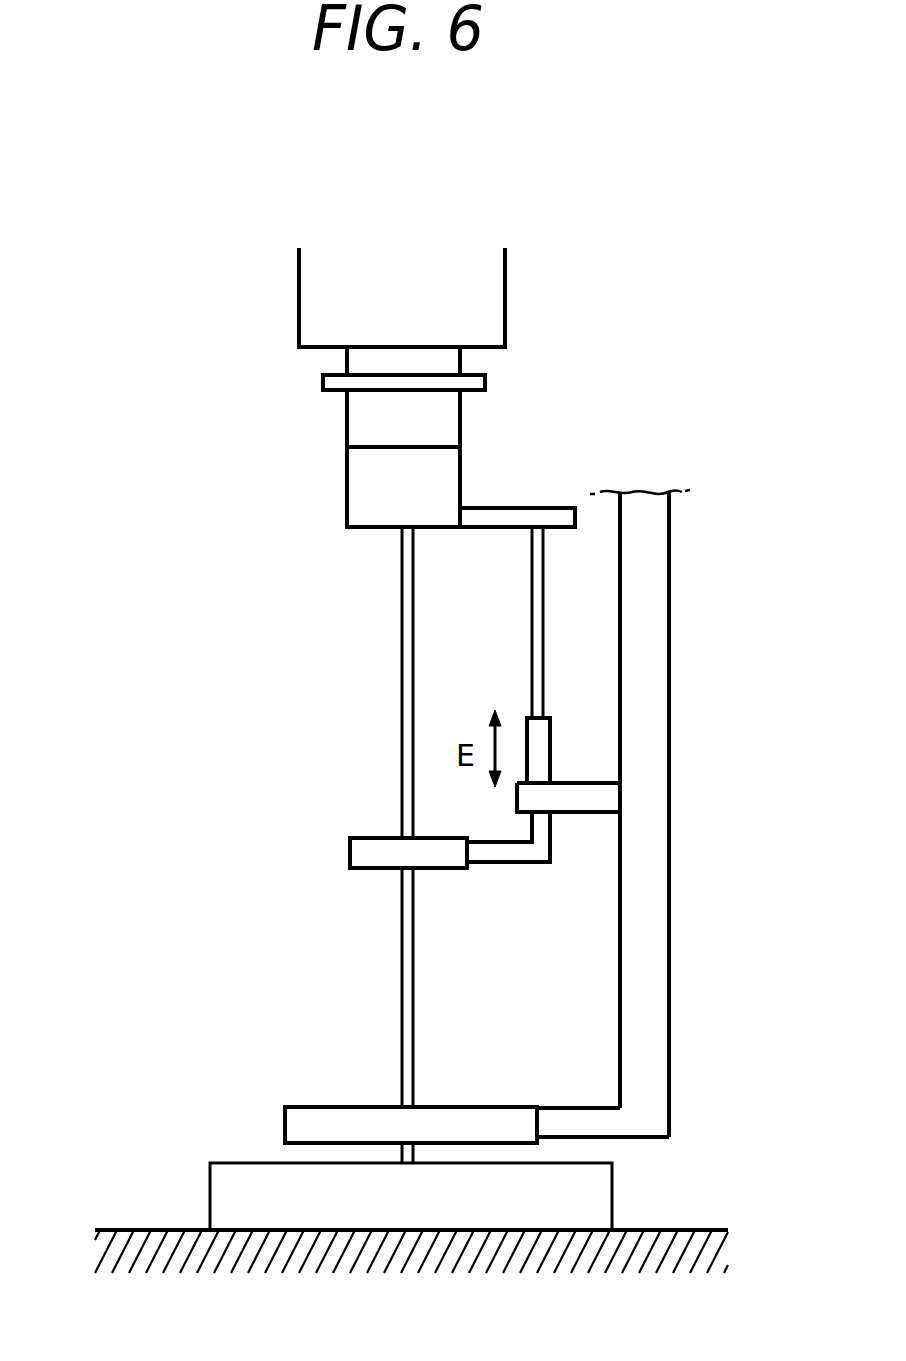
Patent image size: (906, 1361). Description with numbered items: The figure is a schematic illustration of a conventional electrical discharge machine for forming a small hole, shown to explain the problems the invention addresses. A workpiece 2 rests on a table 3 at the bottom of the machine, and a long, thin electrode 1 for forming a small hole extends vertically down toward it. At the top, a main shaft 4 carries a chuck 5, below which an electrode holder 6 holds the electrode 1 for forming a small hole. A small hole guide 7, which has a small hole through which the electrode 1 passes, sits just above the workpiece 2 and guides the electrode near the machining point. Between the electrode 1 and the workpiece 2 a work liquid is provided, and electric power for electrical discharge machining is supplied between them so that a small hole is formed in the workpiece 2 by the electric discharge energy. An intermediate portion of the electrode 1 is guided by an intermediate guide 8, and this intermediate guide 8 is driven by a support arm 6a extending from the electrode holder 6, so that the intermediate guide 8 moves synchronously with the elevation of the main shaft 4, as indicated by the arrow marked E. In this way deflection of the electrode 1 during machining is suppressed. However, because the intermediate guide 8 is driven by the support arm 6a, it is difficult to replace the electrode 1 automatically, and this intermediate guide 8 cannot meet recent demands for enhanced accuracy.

The electrode for forming a small hole 1 is at (400, 673).
The workpiece 2 is at (232, 1170).
The table 3 is at (150, 1229).
The main shaft 4 is at (355, 368).
The chuck 5 is at (355, 422).
The electrode holder 6 is at (355, 488).
The support arm 6a is at (533, 512).
The small hole guide 7 is at (320, 1112).
The intermediate guide 8 is at (356, 853).